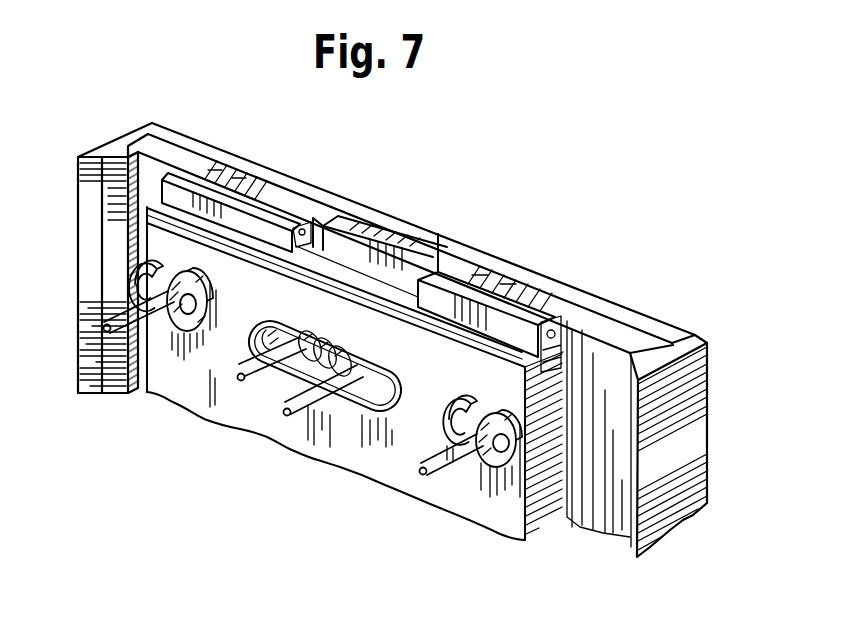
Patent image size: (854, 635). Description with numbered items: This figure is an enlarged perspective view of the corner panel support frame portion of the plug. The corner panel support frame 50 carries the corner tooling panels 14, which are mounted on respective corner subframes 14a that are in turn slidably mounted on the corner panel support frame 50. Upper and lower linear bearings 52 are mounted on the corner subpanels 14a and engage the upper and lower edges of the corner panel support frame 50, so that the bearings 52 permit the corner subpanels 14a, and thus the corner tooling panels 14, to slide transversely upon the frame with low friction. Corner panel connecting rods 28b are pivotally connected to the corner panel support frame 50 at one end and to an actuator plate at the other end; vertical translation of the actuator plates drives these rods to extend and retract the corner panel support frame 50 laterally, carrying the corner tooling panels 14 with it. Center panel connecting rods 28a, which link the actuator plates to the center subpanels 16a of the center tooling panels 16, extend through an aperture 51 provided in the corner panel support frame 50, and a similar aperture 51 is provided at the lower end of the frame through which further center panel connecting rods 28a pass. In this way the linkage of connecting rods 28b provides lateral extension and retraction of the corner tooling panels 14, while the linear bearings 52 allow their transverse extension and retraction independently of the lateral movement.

The corner tooling panel 14 is at (178, 133).
The corner subframe 14a is at (205, 167).
The linear bearing 52 is at (279, 210).
The center tooling panel 16 is at (373, 232).
The center subpanel 16a is at (413, 248).
The center panel connecting rod 28a is at (284, 405).
The corner panel connecting rod 28b is at (120, 312).
The corner panel support frame 50 is at (468, 507).
The aperture 51 is at (352, 410).